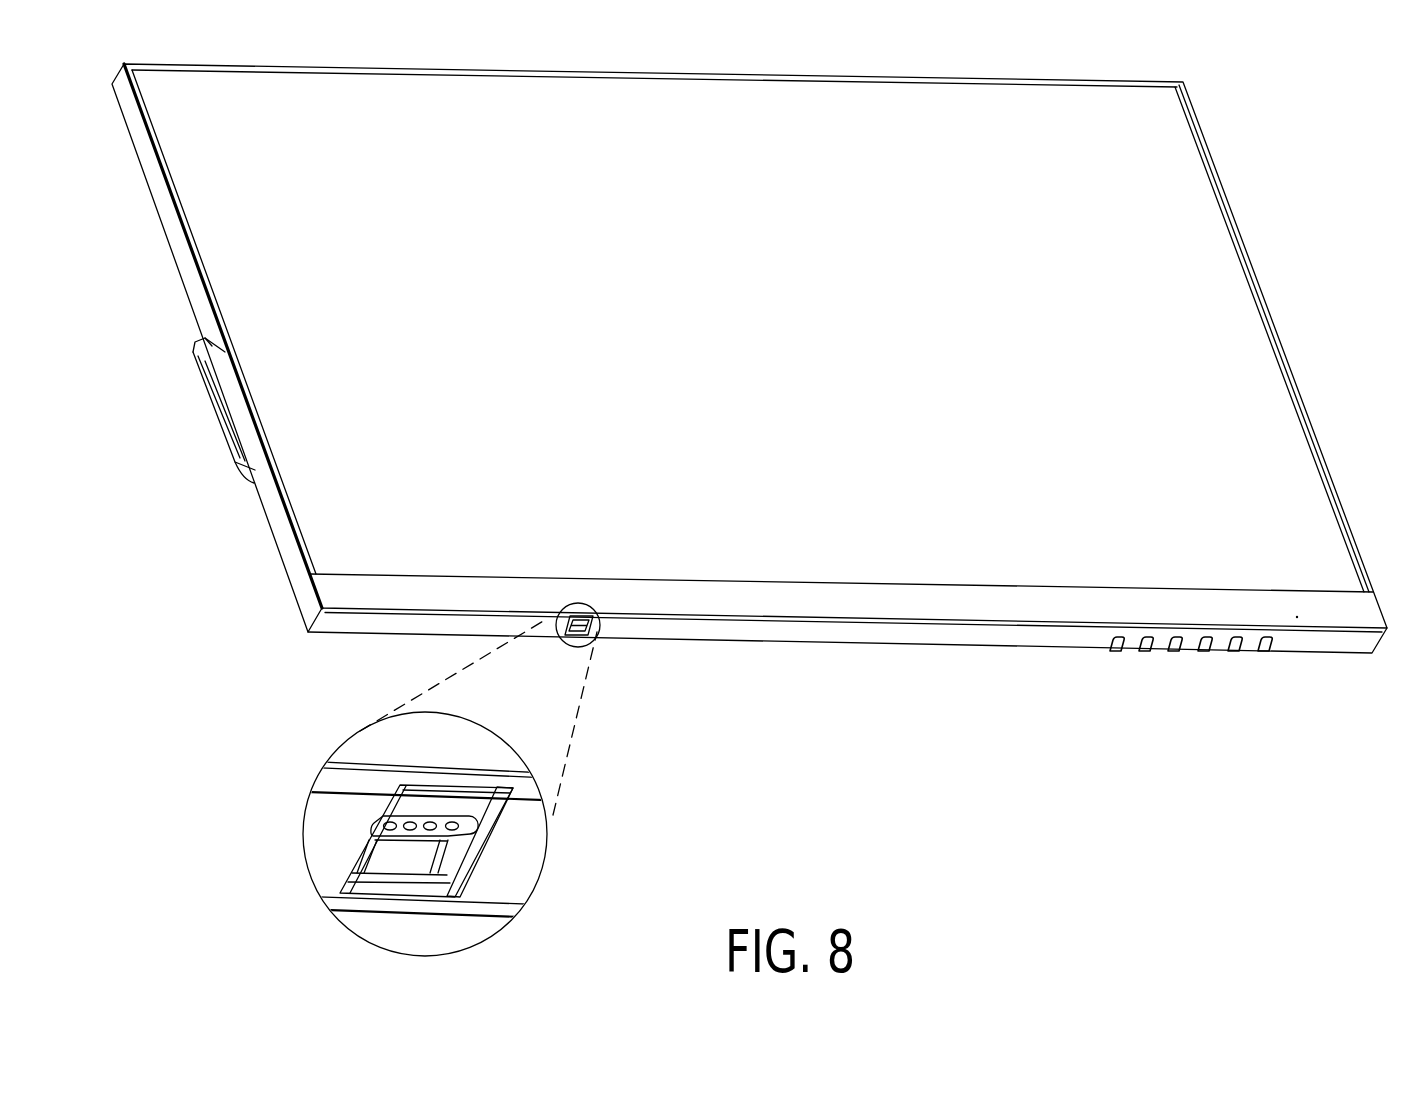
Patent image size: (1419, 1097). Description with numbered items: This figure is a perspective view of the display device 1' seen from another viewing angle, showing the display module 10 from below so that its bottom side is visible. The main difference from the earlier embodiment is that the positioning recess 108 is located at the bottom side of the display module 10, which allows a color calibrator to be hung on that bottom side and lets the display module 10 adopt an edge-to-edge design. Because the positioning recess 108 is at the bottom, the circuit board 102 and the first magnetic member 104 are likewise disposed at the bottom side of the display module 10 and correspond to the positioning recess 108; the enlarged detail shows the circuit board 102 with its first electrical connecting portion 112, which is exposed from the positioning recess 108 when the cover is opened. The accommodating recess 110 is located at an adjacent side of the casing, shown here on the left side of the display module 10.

The display device 1' is at (753, 355).
The display module 10 is at (1244, 243).
The accommodating recess 110 is at (200, 378).
The circuit board 102 is at (423, 817).
The first magnetic member 104 is at (448, 790).
The positioning recess 108 is at (478, 868).
The first electrical connecting portion 112 is at (455, 826).